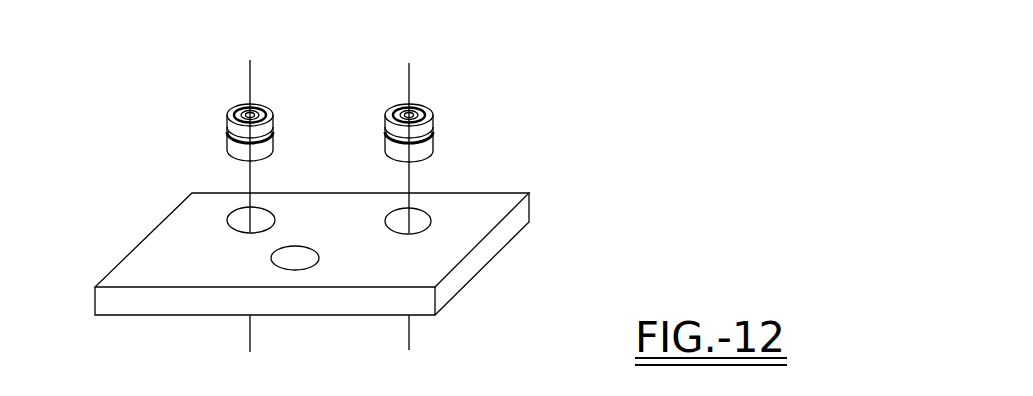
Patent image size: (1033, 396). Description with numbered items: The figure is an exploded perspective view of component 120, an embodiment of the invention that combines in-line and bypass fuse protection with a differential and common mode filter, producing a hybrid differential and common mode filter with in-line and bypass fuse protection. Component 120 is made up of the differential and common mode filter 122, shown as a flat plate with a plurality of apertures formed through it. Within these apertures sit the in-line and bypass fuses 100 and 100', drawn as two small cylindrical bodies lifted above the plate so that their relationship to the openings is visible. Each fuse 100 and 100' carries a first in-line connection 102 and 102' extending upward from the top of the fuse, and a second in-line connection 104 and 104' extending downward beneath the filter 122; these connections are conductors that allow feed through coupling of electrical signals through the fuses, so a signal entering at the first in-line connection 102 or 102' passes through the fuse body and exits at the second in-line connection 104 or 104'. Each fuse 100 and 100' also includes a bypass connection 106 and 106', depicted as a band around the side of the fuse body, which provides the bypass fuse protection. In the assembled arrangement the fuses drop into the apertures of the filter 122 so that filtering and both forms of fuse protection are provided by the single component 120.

The in-line and bypass fuse 100 is at (190, 118).
The in-line and bypass fuse 100' is at (466, 121).
The first in-line connection 102 is at (203, 123).
The first in-line connection 102' is at (371, 124).
The second in-line connection 104 is at (207, 337).
The second in-line connection 104' is at (452, 338).
The bypass connection 106 is at (198, 142).
The bypass connection 106' is at (456, 144).
The component 120 is at (562, 183).
The differential and common mode filter 122 is at (448, 255).